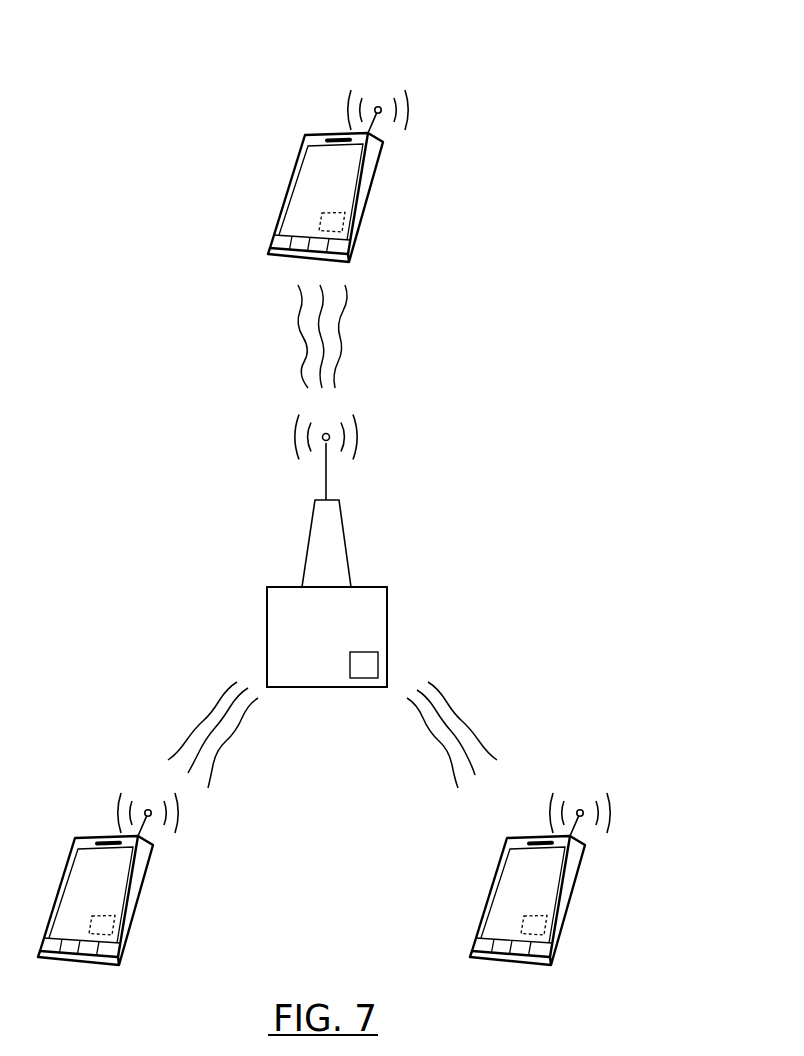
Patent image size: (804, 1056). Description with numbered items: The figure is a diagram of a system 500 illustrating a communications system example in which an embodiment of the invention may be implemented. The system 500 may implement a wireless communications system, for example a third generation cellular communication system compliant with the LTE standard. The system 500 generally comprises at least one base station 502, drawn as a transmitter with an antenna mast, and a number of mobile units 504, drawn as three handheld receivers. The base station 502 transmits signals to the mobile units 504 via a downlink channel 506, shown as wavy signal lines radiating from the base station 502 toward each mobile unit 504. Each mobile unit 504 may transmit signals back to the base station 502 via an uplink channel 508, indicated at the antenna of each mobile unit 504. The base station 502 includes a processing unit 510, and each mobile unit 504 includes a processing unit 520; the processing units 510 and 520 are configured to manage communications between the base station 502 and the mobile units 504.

The system 500 is at (185, 38).
The base station 502 is at (285, 587).
The mobile unit 504 is at (310, 537).
The downlink channel 506 is at (298, 323).
The uplink channel 508 is at (365, 463).
The processing unit 510 is at (350, 667).
The processing unit 520 is at (306, 562).